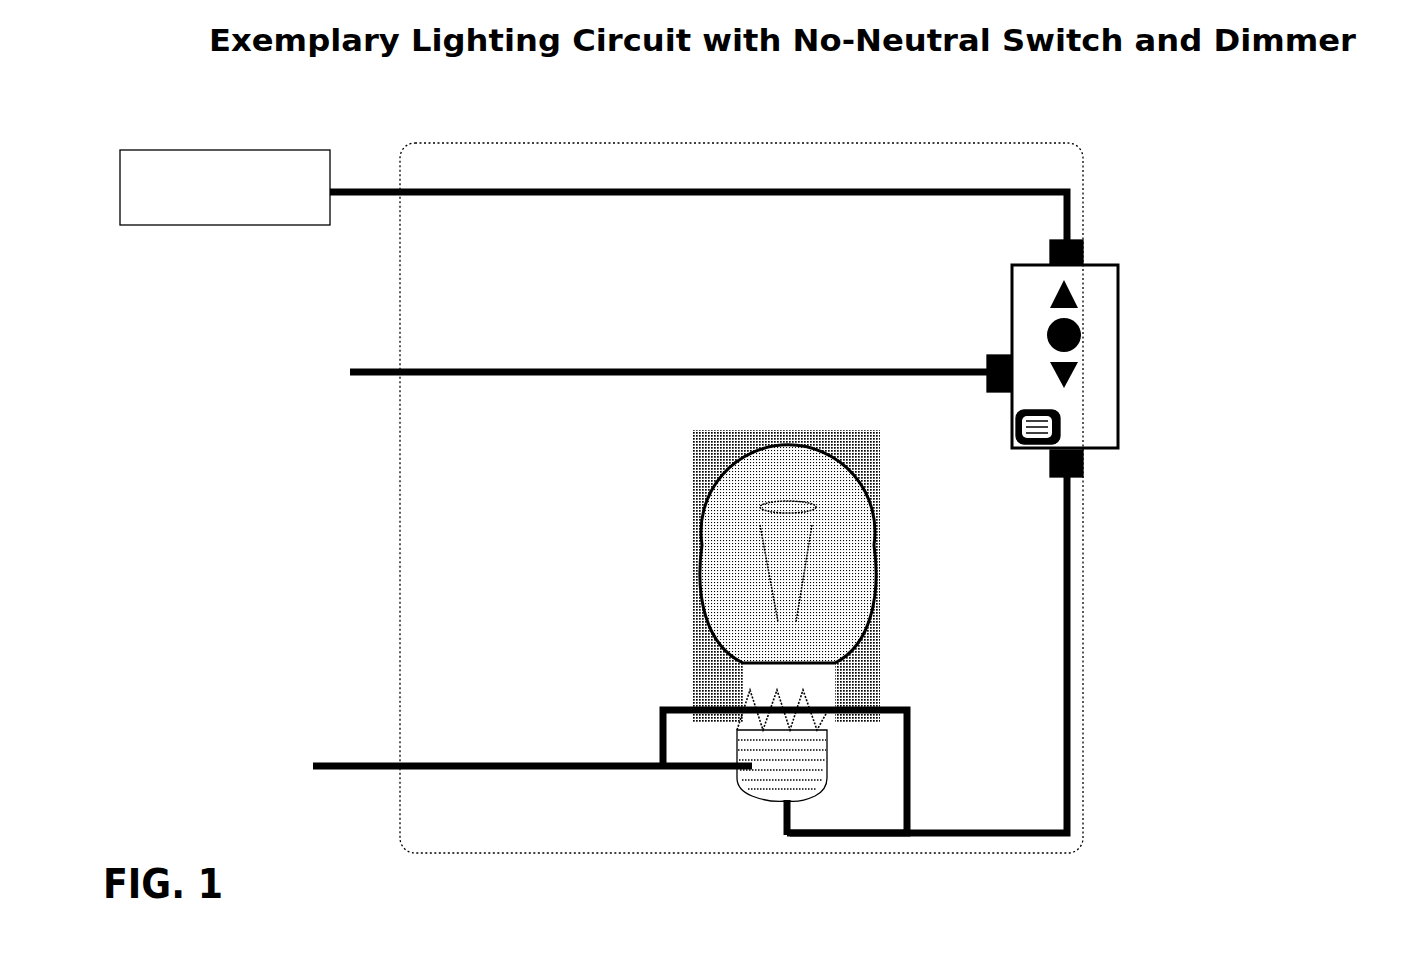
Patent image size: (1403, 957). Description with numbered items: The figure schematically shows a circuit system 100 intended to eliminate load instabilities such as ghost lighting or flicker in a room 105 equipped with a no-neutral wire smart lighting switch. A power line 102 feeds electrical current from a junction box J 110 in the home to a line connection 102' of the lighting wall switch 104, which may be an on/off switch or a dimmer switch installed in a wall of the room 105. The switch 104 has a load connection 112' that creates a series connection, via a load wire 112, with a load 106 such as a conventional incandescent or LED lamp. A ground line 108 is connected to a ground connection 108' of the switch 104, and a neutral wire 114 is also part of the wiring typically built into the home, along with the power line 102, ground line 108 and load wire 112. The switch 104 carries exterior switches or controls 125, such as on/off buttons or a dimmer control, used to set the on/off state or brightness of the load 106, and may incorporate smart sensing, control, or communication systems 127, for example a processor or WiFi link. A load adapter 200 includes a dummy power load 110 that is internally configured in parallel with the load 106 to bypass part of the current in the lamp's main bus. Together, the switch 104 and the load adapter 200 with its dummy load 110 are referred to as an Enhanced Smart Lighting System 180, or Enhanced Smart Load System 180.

The circuit system 100 is at (184, 118).
The power line 102 is at (698, 200).
The line connection 102' is at (1195, 219).
The lighting wall switch (NNWSLS) 104 is at (1170, 628).
The room 105 is at (403, 513).
The load 106 is at (739, 576).
The ground line 108 is at (670, 357).
The ground connection 108' is at (852, 350).
The junction box / dummy power load 110 is at (707, 807).
The load wire 112 is at (1067, 655).
The load connection 112' is at (999, 524).
The neutral wire 114 is at (465, 747).
The exterior switches or controls 125 is at (1082, 388).
The smart sensing, control, or communication systems (SSCCS) 127 is at (1020, 427).
The Enhanced Smart Lighting System (ESLS) 180 is at (890, 755).
The load adapter 200 is at (745, 678).